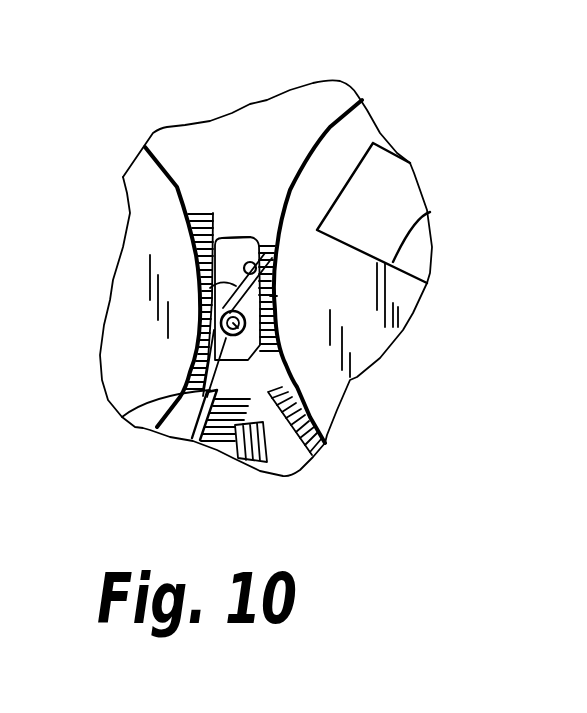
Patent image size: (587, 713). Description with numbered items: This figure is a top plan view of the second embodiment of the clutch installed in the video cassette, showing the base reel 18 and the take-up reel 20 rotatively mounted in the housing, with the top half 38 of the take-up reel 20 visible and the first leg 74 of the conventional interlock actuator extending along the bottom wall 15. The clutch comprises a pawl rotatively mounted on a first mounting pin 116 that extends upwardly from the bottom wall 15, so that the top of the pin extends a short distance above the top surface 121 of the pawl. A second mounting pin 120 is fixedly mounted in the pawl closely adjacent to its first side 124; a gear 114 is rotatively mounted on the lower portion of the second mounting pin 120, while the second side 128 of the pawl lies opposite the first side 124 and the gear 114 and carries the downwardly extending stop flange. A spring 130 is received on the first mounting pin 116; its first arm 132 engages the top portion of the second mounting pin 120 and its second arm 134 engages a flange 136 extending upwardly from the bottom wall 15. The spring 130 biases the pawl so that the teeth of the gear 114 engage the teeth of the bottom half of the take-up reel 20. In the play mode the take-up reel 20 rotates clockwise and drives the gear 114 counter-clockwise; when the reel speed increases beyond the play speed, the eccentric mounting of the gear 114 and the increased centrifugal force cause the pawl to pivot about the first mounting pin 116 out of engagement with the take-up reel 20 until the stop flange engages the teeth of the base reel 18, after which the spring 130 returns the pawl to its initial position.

The bottom wall 15 is at (250, 124).
The base reel 18 is at (184, 170).
The take-up reel 20 is at (331, 114).
The top half 38 is at (368, 127).
The first leg 74 is at (250, 461).
The gear 114 is at (274, 261).
The first mounting pin 116 is at (213, 345).
The second mounting pin 120 is at (278, 244).
The top surface 121 is at (232, 255).
The first side 124 is at (277, 297).
The second side 128 is at (217, 233).
The spring 130 is at (218, 312).
The first arm 132 is at (200, 280).
The second arm 134 is at (122, 418).
The flange 136 is at (171, 436).